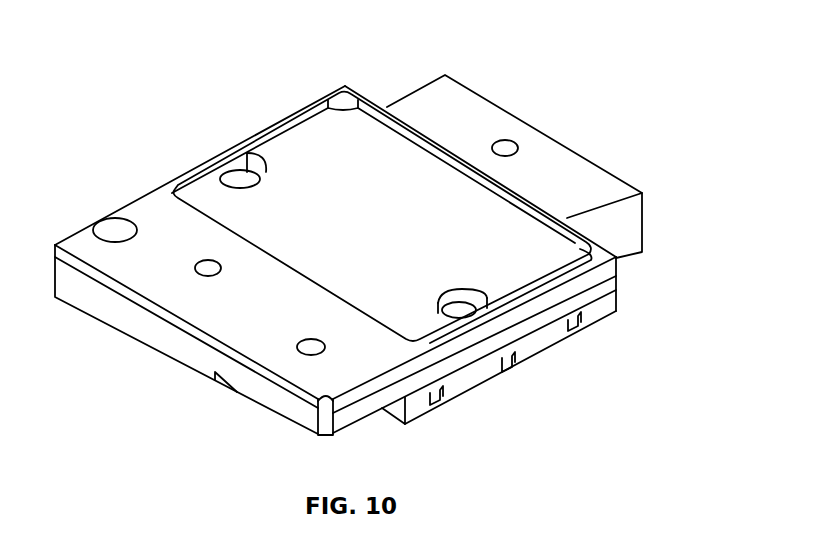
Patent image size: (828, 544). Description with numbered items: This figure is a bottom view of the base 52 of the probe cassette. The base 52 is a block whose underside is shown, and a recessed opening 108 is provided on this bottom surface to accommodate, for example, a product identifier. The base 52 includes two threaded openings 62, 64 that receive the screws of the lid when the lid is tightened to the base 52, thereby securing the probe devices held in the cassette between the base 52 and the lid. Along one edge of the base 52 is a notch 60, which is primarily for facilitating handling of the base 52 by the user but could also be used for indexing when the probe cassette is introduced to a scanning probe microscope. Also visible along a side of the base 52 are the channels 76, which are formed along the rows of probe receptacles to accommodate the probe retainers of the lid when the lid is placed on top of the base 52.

The notch 60 is at (290, 408).
The recessed opening 108 is at (346, 136).
The threaded opening 62 is at (247, 158).
The threaded opening 64 is at (455, 300).
The base 52 is at (643, 224).
The channels 76 is at (436, 407).